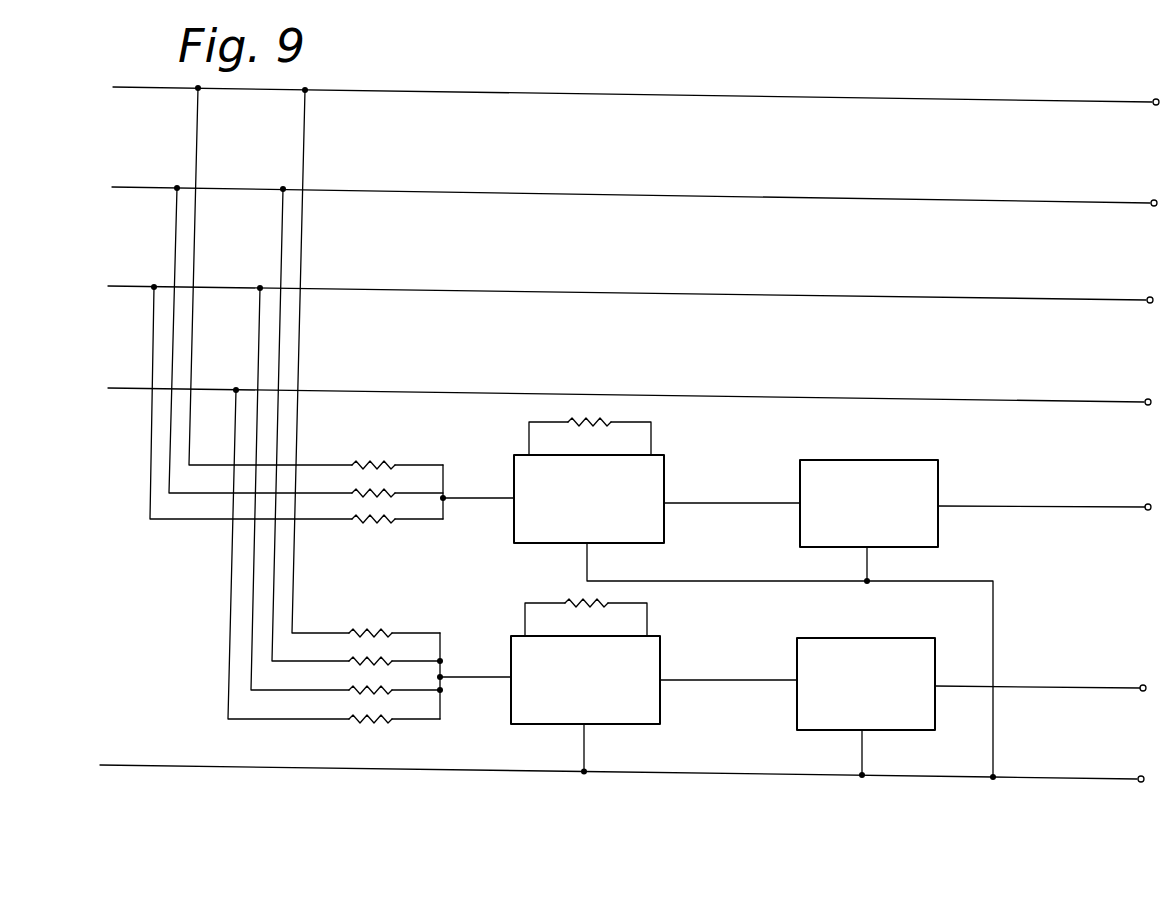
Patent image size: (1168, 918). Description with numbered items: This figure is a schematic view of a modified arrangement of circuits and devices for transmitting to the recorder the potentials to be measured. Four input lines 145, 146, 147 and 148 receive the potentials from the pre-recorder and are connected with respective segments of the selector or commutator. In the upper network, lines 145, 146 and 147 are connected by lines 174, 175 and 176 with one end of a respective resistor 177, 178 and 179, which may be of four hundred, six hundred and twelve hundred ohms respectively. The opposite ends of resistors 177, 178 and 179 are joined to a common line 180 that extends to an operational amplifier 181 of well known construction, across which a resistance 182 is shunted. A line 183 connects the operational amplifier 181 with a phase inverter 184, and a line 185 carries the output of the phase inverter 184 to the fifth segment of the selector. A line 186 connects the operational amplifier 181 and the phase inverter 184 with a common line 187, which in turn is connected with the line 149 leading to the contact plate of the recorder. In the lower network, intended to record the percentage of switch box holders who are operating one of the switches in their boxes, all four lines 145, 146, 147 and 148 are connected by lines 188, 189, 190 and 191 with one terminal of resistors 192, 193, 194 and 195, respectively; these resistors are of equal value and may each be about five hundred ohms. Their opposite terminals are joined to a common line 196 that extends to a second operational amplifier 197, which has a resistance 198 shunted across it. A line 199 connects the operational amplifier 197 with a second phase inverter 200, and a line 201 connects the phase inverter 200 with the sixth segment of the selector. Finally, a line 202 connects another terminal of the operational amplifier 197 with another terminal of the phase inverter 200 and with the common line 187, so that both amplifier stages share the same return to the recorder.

The line 145 is at (408, 70).
The line 146 is at (412, 172).
The line 147 is at (415, 256).
The line 148 is at (388, 390).
The line 149 is at (330, 767).
The line 174 is at (198, 152).
The line 175 is at (175, 236).
The line 176 is at (153, 337).
The resistor 177 is at (372, 461).
The resistor 178 is at (353, 499).
The resistor 179 is at (382, 528).
The common line 180 is at (483, 485).
The operational amplifier 181 is at (540, 544).
The resistance 182 is at (602, 418).
The line 183 is at (725, 502).
The phase inverter 184 is at (867, 459).
The line 185 is at (990, 505).
The line 186 is at (735, 569).
The common line 187 is at (1062, 767).
The line 188 is at (305, 152).
The line 189 is at (280, 238).
The line 190 is at (259, 343).
The line 191 is at (233, 558).
The resistor 192 is at (383, 617).
The resistor 193 is at (357, 661).
The resistor 194 is at (355, 691).
The resistor 195 is at (378, 727).
The common line 196 is at (473, 677).
The operational amplifier 197 is at (538, 724).
The resistance 198 is at (589, 605).
The line 199 is at (723, 680).
The phase inverter 200 is at (883, 627).
The line 201 is at (1090, 667).
The line 202 is at (695, 774).